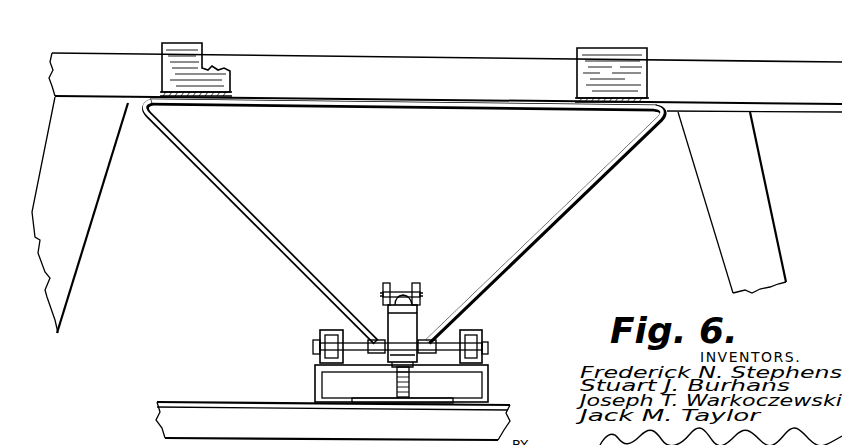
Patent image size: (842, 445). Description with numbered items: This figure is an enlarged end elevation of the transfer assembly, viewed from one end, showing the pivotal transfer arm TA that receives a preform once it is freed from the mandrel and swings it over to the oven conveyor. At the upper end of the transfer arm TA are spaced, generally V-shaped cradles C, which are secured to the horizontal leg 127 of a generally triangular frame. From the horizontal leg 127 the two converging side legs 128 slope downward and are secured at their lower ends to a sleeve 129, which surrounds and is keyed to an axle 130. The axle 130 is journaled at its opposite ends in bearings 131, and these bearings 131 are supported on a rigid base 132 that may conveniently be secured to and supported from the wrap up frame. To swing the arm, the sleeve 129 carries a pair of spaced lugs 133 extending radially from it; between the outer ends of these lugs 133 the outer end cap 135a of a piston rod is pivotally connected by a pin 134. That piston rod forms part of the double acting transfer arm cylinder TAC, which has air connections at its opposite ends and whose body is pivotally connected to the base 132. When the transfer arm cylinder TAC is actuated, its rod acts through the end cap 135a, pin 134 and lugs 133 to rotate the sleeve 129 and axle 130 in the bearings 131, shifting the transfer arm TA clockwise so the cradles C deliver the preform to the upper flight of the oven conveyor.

The horizontal leg 127 is at (431, 102).
The converging side legs 128 is at (262, 221).
The sleeve 129 is at (380, 340).
The axle 130 is at (460, 338).
The bearings 131 is at (332, 330).
The rigid base 132 is at (266, 403).
The lugs 133 is at (421, 288).
The pin 134 is at (422, 298).
The outer end cap 135a is at (404, 284).
The cradles C is at (192, 42).
The transfer arm TA is at (403, 221).
The transfer arm cylinder TAC is at (413, 362).